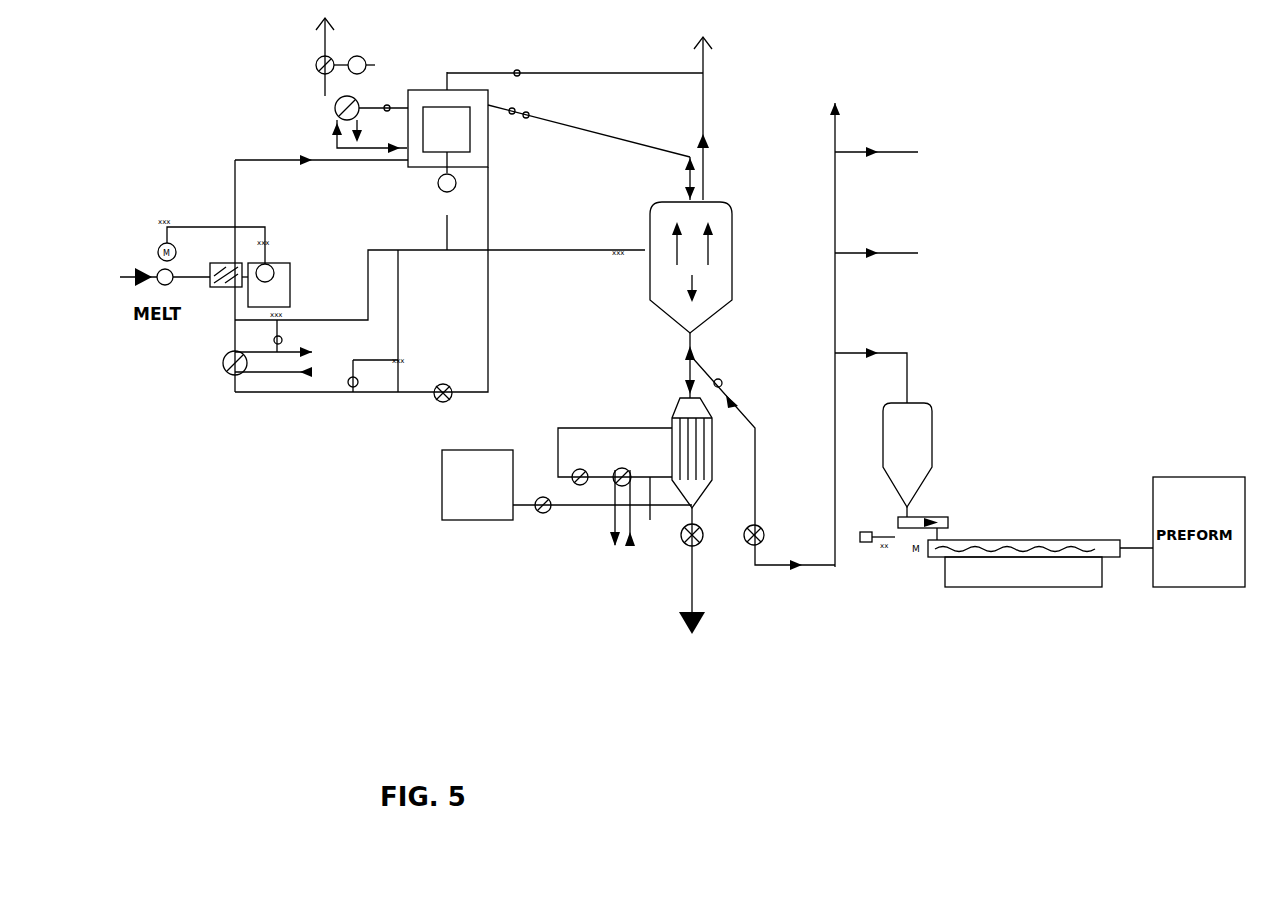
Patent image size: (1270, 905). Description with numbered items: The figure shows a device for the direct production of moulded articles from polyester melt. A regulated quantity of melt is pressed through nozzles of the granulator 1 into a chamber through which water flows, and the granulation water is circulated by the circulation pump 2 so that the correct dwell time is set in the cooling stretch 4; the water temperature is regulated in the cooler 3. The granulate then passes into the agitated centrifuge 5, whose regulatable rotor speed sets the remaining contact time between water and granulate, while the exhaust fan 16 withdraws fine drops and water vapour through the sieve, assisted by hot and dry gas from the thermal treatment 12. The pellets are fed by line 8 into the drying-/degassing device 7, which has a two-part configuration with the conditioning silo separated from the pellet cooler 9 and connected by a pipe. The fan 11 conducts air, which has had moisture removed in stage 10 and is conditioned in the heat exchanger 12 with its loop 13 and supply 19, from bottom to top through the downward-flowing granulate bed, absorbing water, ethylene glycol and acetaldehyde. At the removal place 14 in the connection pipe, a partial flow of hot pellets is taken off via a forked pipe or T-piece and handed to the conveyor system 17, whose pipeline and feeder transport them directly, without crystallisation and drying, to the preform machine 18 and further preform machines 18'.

The granulator 1 is at (250, 275).
The circulation pump 2 is at (446, 384).
The cooler 3 is at (262, 348).
The cooling stretch 4 is at (321, 266).
The agitated centrifuge 5 is at (448, 139).
The drying-/degassing device 7 is at (691, 267).
The inlet line 8 is at (591, 152).
The moisture removal 9 is at (693, 516).
The removal of moisture from the air 10 is at (477, 485).
The fan 11 is at (602, 515).
The thermal treatment gas flow 12 is at (579, 291).
The circulation loop 13 is at (615, 456).
The removal place 14 is at (760, 451).
The exhaust fan 16 is at (341, 57).
The conveyor system 17 is at (763, 526).
The preform machine 18 is at (1040, 552).
The preform machine 18' is at (888, 203).
The heat exchanger 19 is at (358, 124).